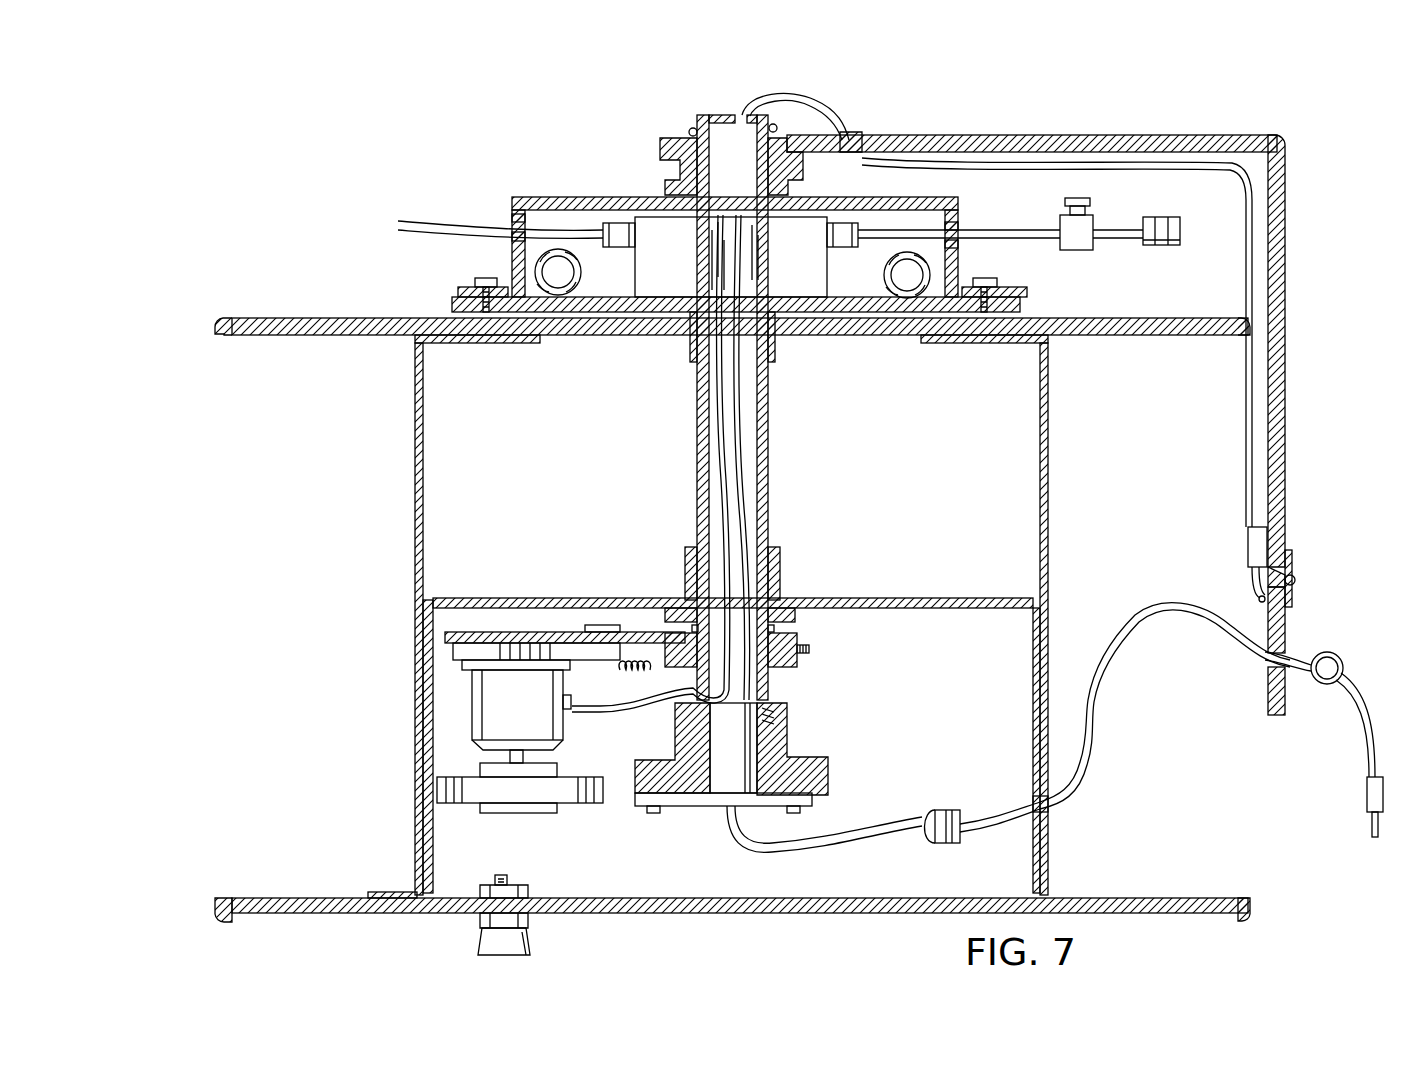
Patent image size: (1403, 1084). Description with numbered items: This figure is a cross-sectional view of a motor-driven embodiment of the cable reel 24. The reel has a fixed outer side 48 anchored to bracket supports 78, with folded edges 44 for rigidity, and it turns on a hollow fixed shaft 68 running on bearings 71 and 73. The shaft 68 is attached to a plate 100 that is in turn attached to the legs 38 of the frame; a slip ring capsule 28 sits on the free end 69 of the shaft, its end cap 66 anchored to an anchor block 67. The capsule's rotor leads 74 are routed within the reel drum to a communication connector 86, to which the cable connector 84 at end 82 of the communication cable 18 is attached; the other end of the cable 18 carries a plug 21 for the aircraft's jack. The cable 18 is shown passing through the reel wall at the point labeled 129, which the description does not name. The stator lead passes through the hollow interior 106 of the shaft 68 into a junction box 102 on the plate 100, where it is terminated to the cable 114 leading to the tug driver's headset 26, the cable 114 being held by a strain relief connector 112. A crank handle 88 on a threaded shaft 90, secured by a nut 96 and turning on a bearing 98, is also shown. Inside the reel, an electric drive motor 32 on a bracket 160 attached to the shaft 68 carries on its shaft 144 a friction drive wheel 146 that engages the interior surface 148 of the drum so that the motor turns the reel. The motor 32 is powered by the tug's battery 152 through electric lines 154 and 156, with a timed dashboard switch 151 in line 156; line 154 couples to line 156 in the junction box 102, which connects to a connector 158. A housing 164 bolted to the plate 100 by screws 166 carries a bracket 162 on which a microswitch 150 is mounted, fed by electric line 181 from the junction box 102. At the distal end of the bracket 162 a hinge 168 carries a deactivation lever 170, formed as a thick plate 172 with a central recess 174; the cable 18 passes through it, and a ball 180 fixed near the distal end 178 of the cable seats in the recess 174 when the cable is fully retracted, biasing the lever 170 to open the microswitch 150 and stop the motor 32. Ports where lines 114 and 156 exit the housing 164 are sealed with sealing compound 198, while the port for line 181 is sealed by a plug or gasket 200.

The communication cable 18 is at (1180, 612).
The plug 21 is at (1366, 792).
The cable reel 24 is at (1082, 387).
The tug driver's headset 26 is at (382, 230).
The slip ring capsule 28 is at (722, 775).
The electric drive motor 32 is at (490, 699).
The legs 38 is at (530, 262).
The folded edges 44 is at (222, 338).
The outer side 48 is at (357, 336).
The end cap 66 is at (785, 808).
The anchor block 67 is at (820, 768).
The fixed shaft 68 is at (770, 440).
The free end 69 is at (788, 725).
The bearing 71 is at (690, 353).
The bearing 73 is at (778, 570).
The rotor leads 74 is at (740, 483).
The bracket supports 78 is at (425, 441).
The cable end 82 is at (1000, 808).
The cable connector 84 is at (957, 840).
The communication connector 86 is at (932, 842).
The crank handle 88 is at (492, 941).
The threaded shaft 90 is at (508, 876).
The nut 96 is at (530, 890).
The bearing 98 is at (530, 921).
The plate 100 is at (1020, 307).
The junction box 102 is at (660, 237).
The hollow interior 106 is at (745, 400).
The strain relief connector 112 is at (620, 240).
The cable 114 is at (570, 237).
The grommet 129 is at (1037, 786).
The motor shaft 144 is at (528, 762).
The friction drive wheel 146 is at (578, 803).
The interior surface 148 is at (433, 854).
The microswitch 150 is at (1247, 533).
The switch 151 is at (1085, 242).
The battery 152 is at (1165, 247).
The electric line 154 is at (717, 445).
The electric line 156 is at (1037, 228).
The connector 158 is at (845, 247).
The bracket 160 is at (520, 630).
The bracket 162 is at (1287, 312).
The housing 164 is at (940, 166).
The screws 166 is at (470, 283).
The hinge 168 is at (1296, 577).
The deactivation lever 170 is at (1287, 628).
The thick plate 172 is at (1267, 700).
The central recess 174 is at (1292, 657).
The distal end 178 is at (1370, 772).
The ball 180 is at (1332, 686).
The electric line 181 is at (1249, 380).
The sealing compound 198 is at (508, 222).
The plug or gasket 200 is at (692, 111).